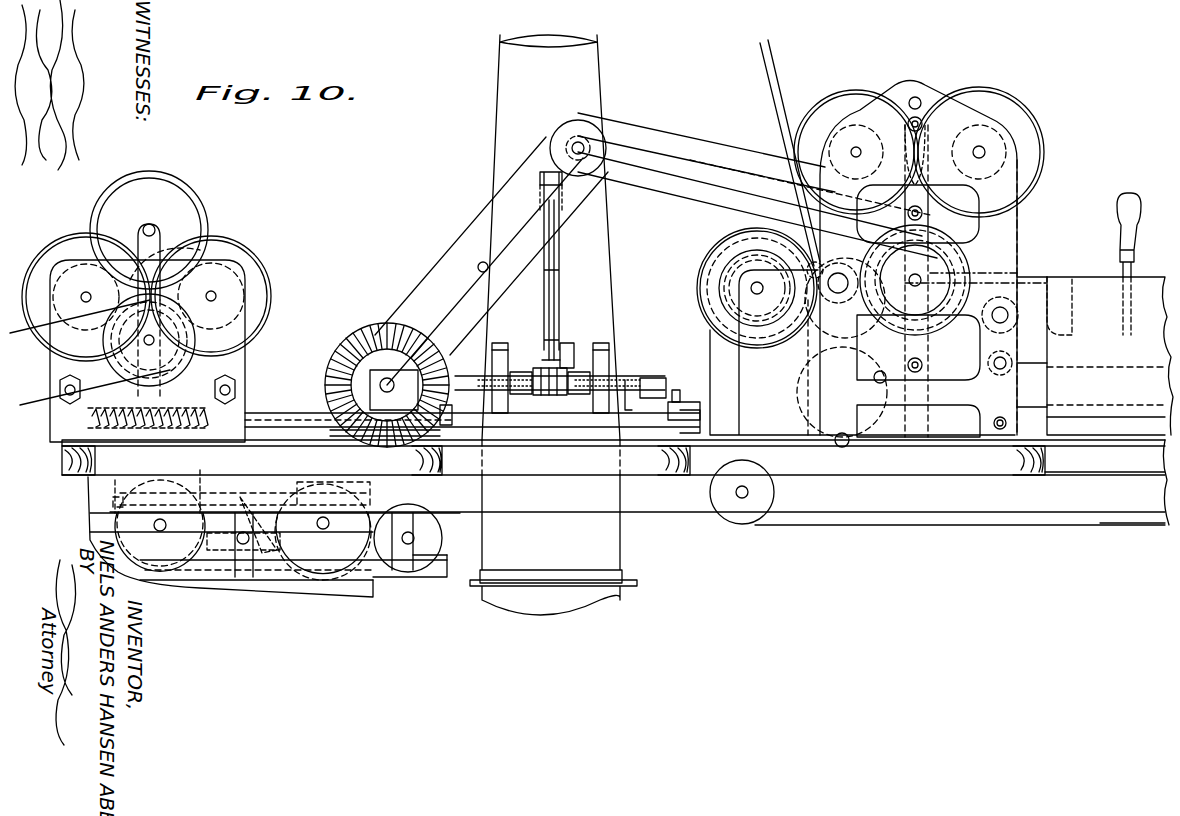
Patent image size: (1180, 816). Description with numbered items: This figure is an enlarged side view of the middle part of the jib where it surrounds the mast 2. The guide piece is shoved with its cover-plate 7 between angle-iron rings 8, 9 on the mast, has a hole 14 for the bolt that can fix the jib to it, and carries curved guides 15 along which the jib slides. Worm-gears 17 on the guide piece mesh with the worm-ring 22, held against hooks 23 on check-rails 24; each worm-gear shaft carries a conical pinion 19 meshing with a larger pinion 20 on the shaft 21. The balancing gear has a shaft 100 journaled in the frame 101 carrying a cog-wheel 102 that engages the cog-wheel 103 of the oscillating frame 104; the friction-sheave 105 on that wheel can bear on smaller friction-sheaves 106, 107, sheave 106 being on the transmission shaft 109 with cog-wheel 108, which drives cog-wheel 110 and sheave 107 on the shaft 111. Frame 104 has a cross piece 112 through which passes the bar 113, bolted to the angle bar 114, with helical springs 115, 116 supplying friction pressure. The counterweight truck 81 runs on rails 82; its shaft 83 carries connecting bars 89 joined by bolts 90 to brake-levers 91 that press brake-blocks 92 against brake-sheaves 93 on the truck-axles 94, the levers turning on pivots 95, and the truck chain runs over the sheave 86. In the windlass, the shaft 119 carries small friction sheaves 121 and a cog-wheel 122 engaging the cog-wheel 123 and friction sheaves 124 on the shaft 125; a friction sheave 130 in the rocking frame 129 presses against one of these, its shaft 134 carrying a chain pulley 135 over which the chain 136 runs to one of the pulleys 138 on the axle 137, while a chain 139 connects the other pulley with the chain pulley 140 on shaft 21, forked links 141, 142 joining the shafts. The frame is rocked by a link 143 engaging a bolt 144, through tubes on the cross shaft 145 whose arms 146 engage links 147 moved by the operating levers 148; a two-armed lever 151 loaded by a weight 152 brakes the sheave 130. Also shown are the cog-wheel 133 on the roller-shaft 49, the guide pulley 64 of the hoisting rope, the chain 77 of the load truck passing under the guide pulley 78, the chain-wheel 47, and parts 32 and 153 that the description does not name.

The mast 2 is at (553, 325).
The cover-plate 7 is at (520, 414).
The angle-iron ring 8 is at (646, 398).
The angle-iron ring 9 is at (622, 428).
The hole 14 is at (680, 392).
The guides 15 is at (566, 432).
The worm-gears 17 is at (561, 354).
The conical pinion 19 is at (452, 425).
The conical pinion 20 is at (356, 436).
The shaft 21 is at (387, 378).
The worm-ring 22 is at (544, 396).
The hooks 23 is at (510, 385).
The check-rails 24 is at (492, 356).
The rod 32 is at (558, 292).
The chain-wheel 47 is at (752, 492).
The roller-shaft 49 is at (757, 292).
The guide pulley 64 is at (826, 355).
The chain 77 is at (1106, 395).
The guide pulley 78 is at (900, 400).
The truck 81 is at (368, 552).
The rails 82 is at (433, 579).
The shaft 83 is at (278, 500).
The sheave 86 is at (416, 538).
The connecting bars 89 is at (240, 500).
The bolts 90 is at (246, 500).
The brake-lever 91 is at (200, 498).
The brake-block 92 is at (148, 510).
The brake-sheaves 93 is at (170, 530).
The truck-axle 94 is at (158, 528).
The pivots 95 is at (270, 537).
The shaft 100 is at (145, 342).
The frame 101 is at (238, 326).
The cog-wheel 102 is at (190, 370).
The cog-wheel 103 is at (178, 205).
The frame 104 is at (152, 236).
The friction-sheave 105 is at (200, 228).
The friction-sheave 106 is at (232, 300).
The friction-sheave 107 is at (78, 278).
The cog-wheel 108 is at (250, 270).
The transmission shaft 109 is at (212, 294).
The cog-wheel 110 is at (68, 250).
The shaft 111 is at (86, 302).
The cross piece 112 is at (145, 481).
The bar 113 is at (268, 413).
The angle bar 114 is at (90, 362).
The helical spring 115 is at (250, 420).
The helical spring 116 is at (96, 430).
The shaft 119 is at (858, 150).
The friction sheaves 121 is at (843, 142).
The cog-wheel 122 is at (868, 104).
The cog-wheel 123 is at (978, 98).
The friction sheaves 124 is at (990, 146).
The shaft 125 is at (981, 150).
The frame 129 is at (980, 230).
The friction sheave 130 is at (962, 200).
The cog-wheel 133 is at (712, 262).
The shaft 134 is at (822, 226).
The chain pulley 135 is at (938, 258).
The chain 136 is at (672, 146).
The axle 137 is at (566, 147).
The pulleys 138 is at (578, 122).
The chain 139 is at (466, 244).
The chain pulley 140 is at (383, 378).
The forked link 141 is at (712, 172).
The forked link 142 is at (522, 232).
The link 143 is at (968, 380).
The bolt 144 is at (916, 372).
The cross shaft 145 is at (1006, 320).
The arm 146 is at (1012, 386).
The link 147 is at (1064, 435).
The operating levers 148 is at (1118, 206).
The two-armed lever 151 is at (1034, 277).
The weight 152 is at (1062, 292).
The slot 153 is at (1040, 300).